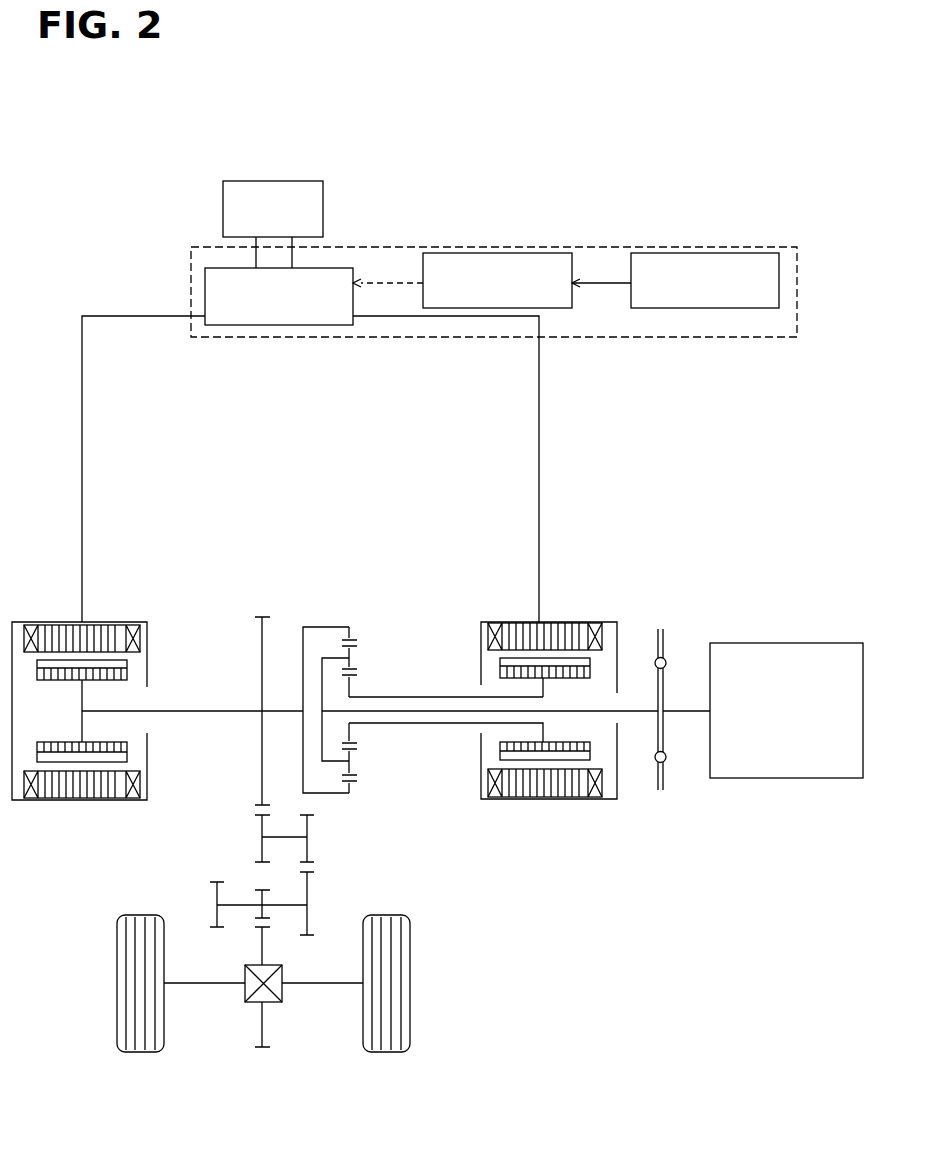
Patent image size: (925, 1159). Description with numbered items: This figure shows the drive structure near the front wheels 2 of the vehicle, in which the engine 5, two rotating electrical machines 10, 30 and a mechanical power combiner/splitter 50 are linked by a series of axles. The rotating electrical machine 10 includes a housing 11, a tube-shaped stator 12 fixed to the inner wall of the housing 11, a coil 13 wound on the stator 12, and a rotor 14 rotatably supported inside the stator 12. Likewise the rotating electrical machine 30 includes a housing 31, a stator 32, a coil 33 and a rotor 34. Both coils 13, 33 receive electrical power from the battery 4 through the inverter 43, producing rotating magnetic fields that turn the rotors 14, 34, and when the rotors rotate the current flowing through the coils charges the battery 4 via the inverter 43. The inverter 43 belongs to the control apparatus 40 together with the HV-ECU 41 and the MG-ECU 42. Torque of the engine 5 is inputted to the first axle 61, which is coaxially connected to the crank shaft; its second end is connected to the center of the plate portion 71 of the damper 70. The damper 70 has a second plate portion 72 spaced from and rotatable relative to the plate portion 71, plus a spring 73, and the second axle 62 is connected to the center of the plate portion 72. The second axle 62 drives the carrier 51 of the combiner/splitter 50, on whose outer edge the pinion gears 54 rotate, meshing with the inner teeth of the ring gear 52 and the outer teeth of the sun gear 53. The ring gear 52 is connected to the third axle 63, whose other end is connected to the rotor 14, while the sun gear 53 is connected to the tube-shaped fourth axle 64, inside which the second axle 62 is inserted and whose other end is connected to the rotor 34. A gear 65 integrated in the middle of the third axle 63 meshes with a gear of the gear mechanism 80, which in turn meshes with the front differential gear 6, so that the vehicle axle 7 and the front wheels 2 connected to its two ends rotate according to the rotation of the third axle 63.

The front wheel 2 is at (117, 983).
The battery 4 is at (266, 181).
The internal-combustion engine 5 is at (795, 643).
The front differential gear 6 is at (282, 996).
The vehicle axle 7 is at (197, 985).
The rotating electrical machine 10 is at (105, 703).
The housing 11 is at (146, 800).
The stator 12 is at (84, 800).
The coil 13 is at (32, 800).
The rotor 14 is at (127, 749).
The rotating electrical machine 30 is at (487, 704).
The housing 31 is at (612, 800).
The stator 32 is at (548, 800).
The coil 33 is at (495, 800).
The rotor 34 is at (500, 750).
The control apparatus 40 is at (573, 247).
The HV-ECU 41 is at (709, 253).
The MG-ECU 42 is at (491, 253).
The inverter 43 is at (345, 268).
The mechanical power combiner/splitter 50 is at (339, 684).
The carrier 51 is at (322, 688).
The ring gear 52 is at (322, 627).
The sun gear 53 is at (356, 748).
The pinion gear 54 is at (355, 640).
The first axle 61 is at (683, 711).
The second axle 62 is at (630, 711).
The third axle 63 is at (226, 711).
The fourth axle 64 is at (394, 697).
The gear 65 is at (259, 617).
The damper 70 is at (671, 687).
The plate portion 71 is at (664, 636).
The plate portion 72 is at (656, 660).
The spring 73 is at (655, 661).
The gear mechanism 80 is at (329, 869).